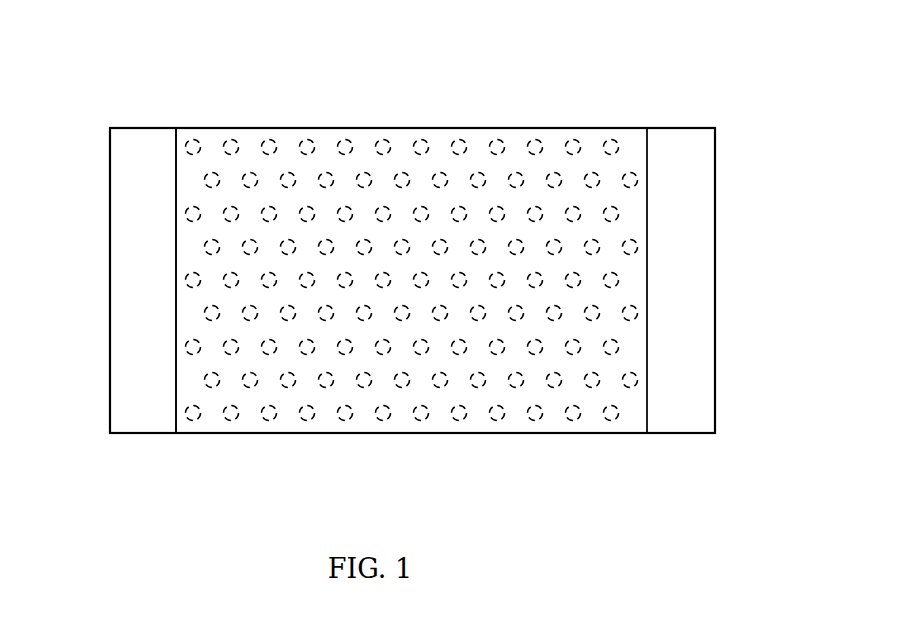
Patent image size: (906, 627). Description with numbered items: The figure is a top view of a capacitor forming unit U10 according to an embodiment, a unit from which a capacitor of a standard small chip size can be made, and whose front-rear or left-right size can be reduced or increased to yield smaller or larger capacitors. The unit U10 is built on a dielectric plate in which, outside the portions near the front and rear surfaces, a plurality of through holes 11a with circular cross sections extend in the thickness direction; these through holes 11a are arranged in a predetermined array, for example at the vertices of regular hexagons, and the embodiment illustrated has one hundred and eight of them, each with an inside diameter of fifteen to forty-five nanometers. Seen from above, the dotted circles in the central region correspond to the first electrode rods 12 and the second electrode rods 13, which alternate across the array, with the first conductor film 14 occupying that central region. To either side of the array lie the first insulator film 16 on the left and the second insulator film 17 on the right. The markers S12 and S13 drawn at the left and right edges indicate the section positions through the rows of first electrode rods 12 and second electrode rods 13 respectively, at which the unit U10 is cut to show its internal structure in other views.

The unit U10 is at (118, 126).
The through holes 11a is at (176, 206).
The first electrode rods 12 is at (192, 128).
The second electrode rods 13 is at (230, 128).
The first conductor film 14 is at (632, 150).
The first insulator film 16 is at (122, 282).
The second insulator film 17 is at (703, 283).
The section line S12 is at (412, 142).
The section line S13 is at (412, 375).